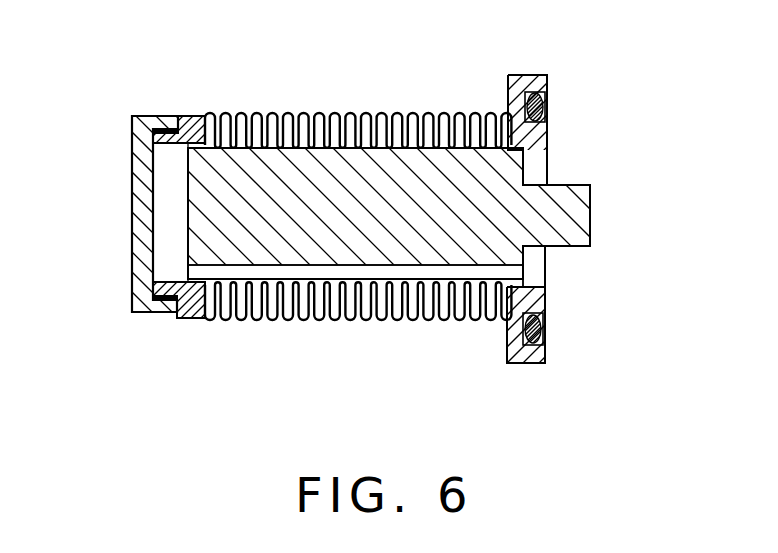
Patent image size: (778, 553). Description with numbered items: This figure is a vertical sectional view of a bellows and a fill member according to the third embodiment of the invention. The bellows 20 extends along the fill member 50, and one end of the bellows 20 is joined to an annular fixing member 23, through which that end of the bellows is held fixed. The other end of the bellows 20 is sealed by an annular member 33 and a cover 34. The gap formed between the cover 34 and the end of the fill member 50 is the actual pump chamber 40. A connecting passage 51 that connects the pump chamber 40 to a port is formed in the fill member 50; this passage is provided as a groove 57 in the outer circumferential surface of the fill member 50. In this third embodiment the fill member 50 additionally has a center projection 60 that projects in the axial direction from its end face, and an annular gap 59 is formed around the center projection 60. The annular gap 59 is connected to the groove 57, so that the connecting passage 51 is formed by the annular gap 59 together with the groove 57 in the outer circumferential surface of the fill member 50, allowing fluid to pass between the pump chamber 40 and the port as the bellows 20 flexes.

The bellows 20 is at (242, 115).
The annular fixing member 23 is at (520, 353).
The annular member 33 is at (193, 318).
The cover 34 is at (137, 287).
The pump chamber 40 is at (167, 212).
The fill member 50 is at (358, 167).
The connecting passage 51 is at (355, 272).
The groove 57 is at (355, 273).
The annular gap 59 is at (538, 272).
The center projection 60 is at (583, 233).